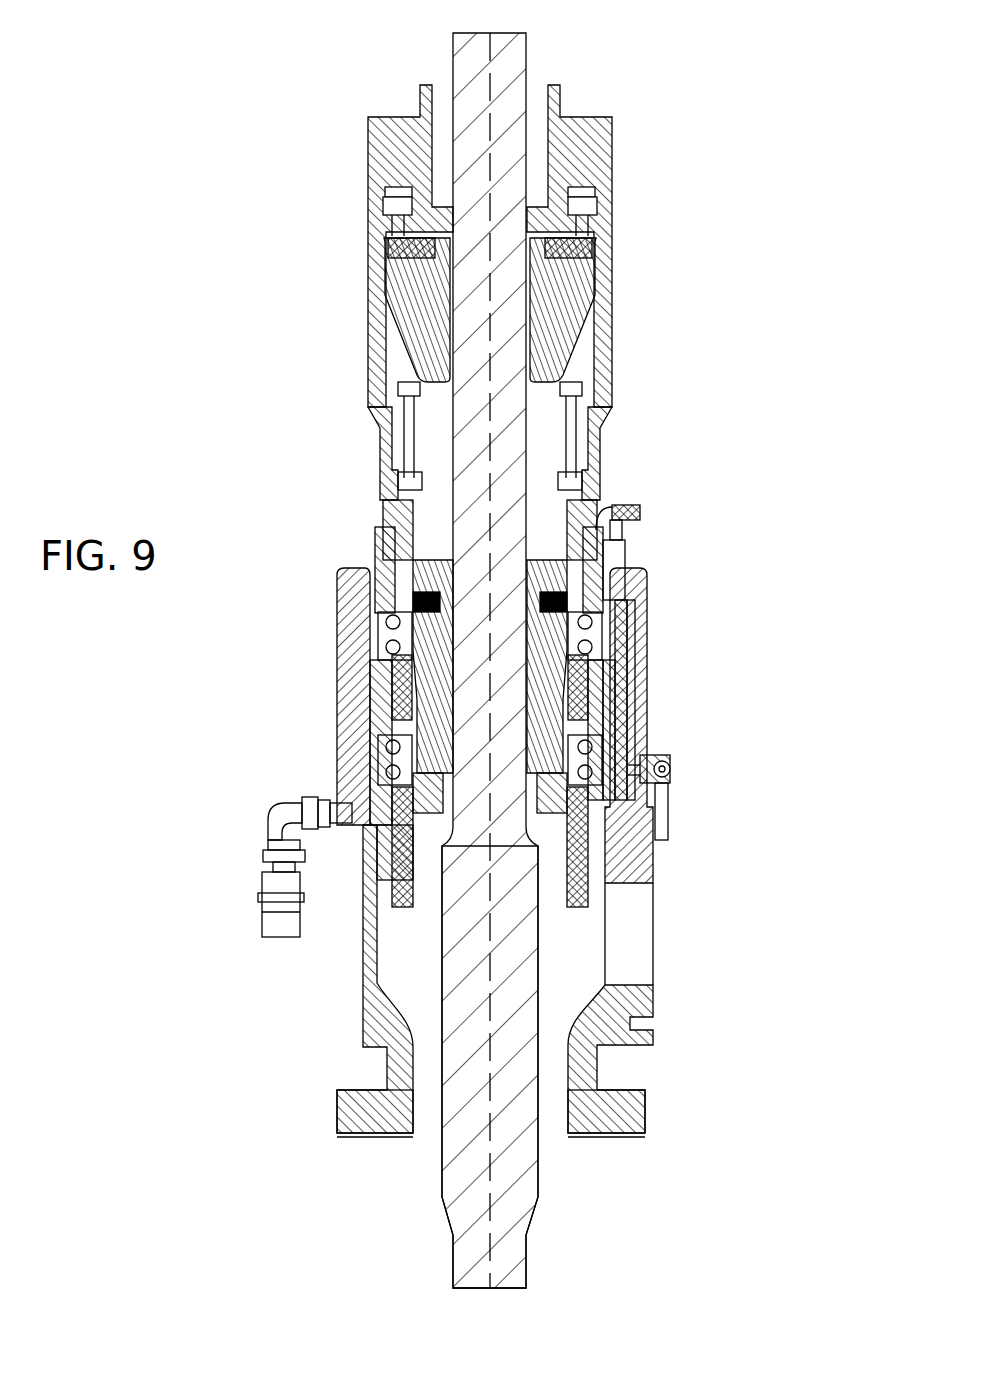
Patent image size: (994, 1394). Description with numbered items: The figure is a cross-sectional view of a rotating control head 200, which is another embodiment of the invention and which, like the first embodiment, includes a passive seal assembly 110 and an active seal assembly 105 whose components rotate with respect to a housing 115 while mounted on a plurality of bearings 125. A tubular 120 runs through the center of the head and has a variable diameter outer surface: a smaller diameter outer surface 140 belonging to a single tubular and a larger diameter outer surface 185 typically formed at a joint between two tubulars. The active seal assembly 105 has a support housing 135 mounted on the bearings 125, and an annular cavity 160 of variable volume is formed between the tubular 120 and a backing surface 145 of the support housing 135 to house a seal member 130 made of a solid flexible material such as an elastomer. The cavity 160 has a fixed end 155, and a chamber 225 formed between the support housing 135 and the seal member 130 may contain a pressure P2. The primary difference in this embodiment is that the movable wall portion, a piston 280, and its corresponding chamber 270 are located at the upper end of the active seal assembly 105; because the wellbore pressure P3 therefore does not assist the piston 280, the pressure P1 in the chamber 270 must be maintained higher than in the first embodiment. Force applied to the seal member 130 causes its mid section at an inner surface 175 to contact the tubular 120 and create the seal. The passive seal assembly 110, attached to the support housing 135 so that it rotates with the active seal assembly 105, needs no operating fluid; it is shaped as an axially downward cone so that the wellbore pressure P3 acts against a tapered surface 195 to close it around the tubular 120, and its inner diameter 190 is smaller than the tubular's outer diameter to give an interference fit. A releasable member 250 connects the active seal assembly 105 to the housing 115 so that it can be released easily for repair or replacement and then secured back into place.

The rotating control head 200 is at (826, 41).
The tubular 120 is at (527, 47).
The smaller diameter outer surface 140 is at (530, 281).
The passive seal assembly 110 is at (330, 182).
The inner diameter 190 is at (448, 352).
The tapered surface 195 is at (568, 345).
The active seal assembly 105 is at (245, 628).
The fixed end 155 is at (378, 597).
The chamber 270 is at (388, 562).
The piston 280 is at (613, 567).
The releasable member 250 is at (387, 620).
The seal member 130 is at (432, 642).
The bearings 125 is at (618, 647).
The inner surface 175 is at (635, 658).
The support housing 135 is at (593, 695).
The annular cavity 160 is at (387, 707).
The chamber 225 is at (395, 730).
The backing surface 145 is at (643, 753).
The larger diameter outer surface 185 is at (440, 1008).
The housing 115 is at (623, 1115).
The pressure P1 is at (388, 546).
The pressure P2 is at (340, 678).
The wellbore pressure P3 is at (410, 940).